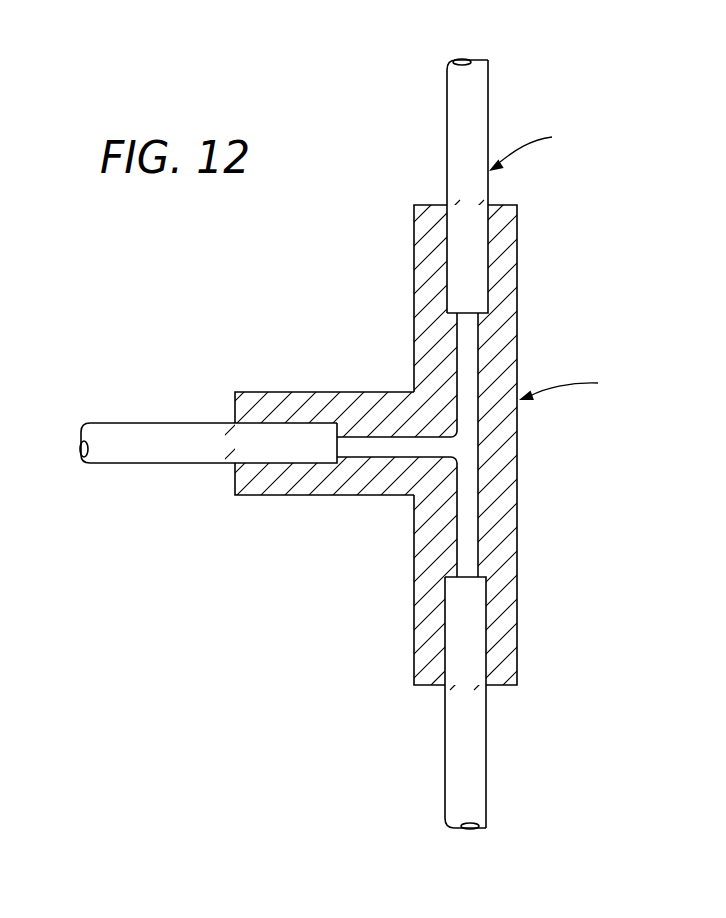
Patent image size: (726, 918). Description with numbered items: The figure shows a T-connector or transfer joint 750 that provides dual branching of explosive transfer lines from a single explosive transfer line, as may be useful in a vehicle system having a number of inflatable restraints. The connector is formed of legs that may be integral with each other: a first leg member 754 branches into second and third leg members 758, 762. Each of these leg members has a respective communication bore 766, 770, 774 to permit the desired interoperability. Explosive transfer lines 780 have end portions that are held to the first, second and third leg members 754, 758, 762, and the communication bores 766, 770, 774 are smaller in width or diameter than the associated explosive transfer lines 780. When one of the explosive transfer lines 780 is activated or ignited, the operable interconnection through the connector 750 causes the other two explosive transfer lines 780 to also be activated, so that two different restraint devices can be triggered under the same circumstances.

The T-connector 750 is at (545, 258).
The first leg member 754 is at (276, 398).
The second leg member 758 is at (428, 270).
The third leg member 762 is at (507, 614).
The communication bore 766 is at (352, 450).
The communication bore 770 is at (467, 338).
The communication bore 774 is at (470, 482).
The explosive transfer lines 780 is at (478, 108).